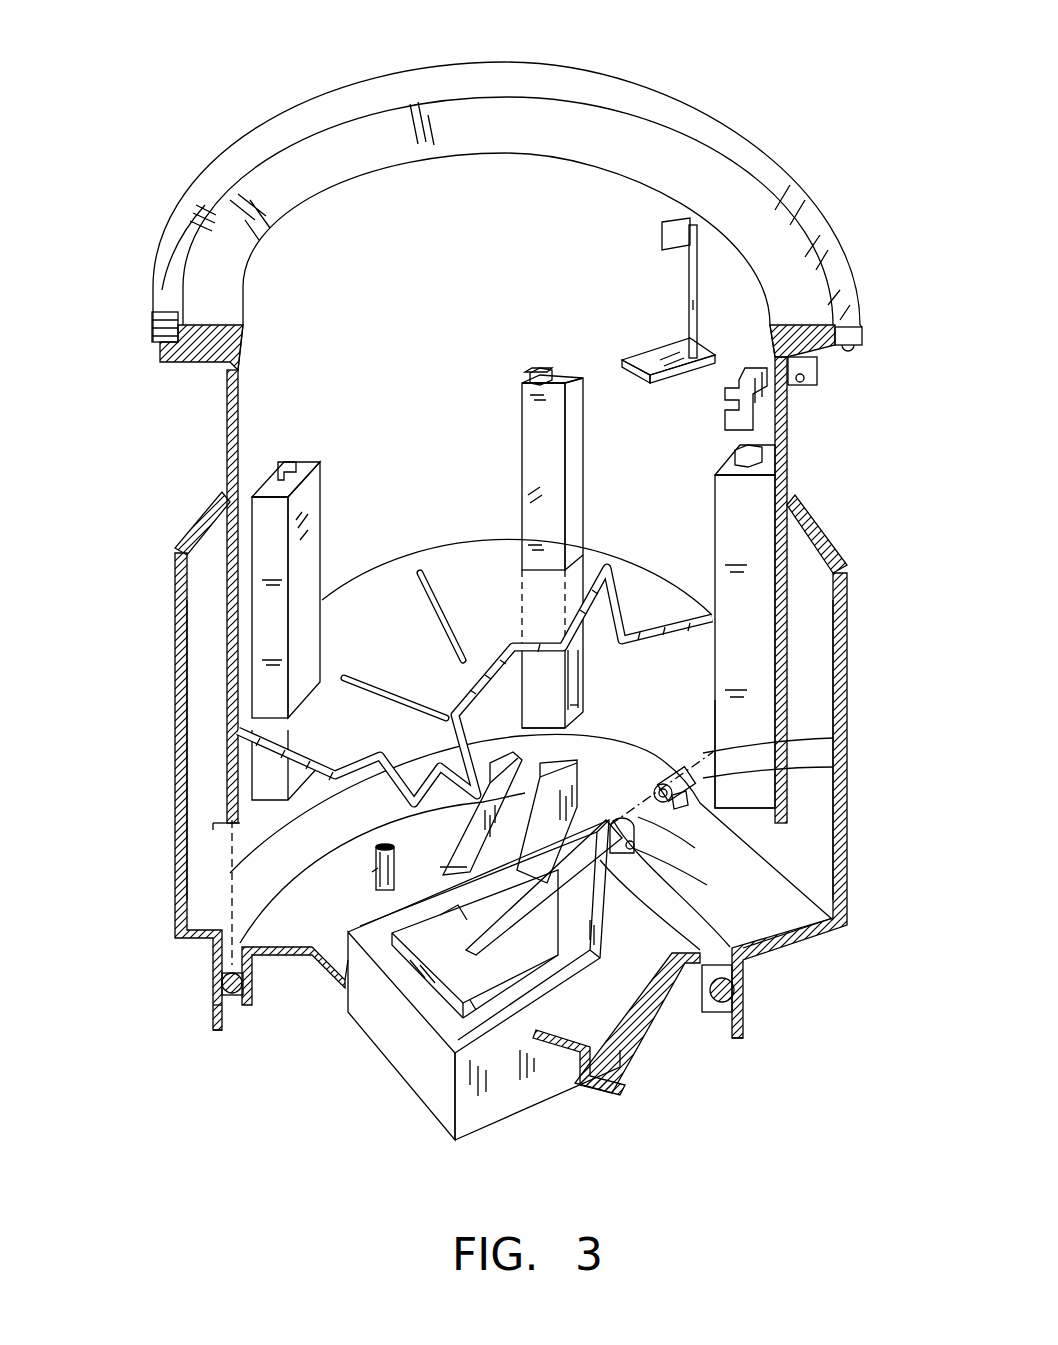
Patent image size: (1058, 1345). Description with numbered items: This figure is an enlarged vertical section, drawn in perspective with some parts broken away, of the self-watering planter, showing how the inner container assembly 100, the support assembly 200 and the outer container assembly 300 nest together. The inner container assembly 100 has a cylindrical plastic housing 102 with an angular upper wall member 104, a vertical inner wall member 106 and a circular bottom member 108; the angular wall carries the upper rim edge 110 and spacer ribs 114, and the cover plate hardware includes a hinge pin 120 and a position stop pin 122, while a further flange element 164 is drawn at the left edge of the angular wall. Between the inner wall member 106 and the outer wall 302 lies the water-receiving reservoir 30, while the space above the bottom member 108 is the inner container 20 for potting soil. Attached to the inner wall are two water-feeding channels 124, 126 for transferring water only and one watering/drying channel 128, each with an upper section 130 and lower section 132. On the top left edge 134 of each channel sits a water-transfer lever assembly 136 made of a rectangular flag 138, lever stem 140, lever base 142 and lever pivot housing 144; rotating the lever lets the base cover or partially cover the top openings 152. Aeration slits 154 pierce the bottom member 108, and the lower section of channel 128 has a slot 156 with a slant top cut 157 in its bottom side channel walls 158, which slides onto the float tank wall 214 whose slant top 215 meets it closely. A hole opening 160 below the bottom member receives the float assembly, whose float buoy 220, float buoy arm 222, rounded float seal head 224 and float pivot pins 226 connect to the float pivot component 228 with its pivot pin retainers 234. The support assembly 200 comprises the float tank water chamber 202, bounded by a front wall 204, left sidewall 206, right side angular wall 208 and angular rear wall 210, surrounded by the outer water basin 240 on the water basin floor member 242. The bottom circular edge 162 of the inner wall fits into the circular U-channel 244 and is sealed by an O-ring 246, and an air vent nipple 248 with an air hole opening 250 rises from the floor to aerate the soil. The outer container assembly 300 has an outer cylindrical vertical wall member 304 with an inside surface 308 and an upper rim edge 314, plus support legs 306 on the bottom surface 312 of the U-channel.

The inner container 20 is at (452, 188).
The water-receiving reservoir 30 is at (207, 727).
The inner container assembly 100 is at (553, 201).
The cylindrical plastic housing 102 is at (223, 412).
The angular upper wall member 104 is at (338, 150).
The inner wall member 106 is at (237, 387).
The circular bottom member 108 is at (453, 548).
The upper rim edge 110 is at (240, 175).
The spacer ribs 114 is at (175, 358).
The hinge pin 120 is at (800, 393).
The position stop pin 122 is at (848, 352).
The water-feeding channel 124 is at (312, 522).
The water-feeding channel 126 is at (720, 543).
The water-feeding channel 128 is at (533, 442).
The upper section 130 is at (318, 480).
The lower section 132 is at (276, 790).
The top left edge 134 is at (545, 365).
The water-transfer lever assembly 136 is at (683, 273).
The rectangular flag 138 is at (661, 220).
The lever stem 140 is at (687, 298).
The lever base 142 is at (662, 347).
The lever pivot housing 144 is at (753, 363).
The top openings 152 is at (278, 467).
The aeration slits 154 is at (430, 600).
The slot 156 is at (588, 712).
The slant top cut 157 is at (598, 640).
The bottom side channel walls 158 is at (545, 725).
The hole opening 160 is at (833, 738).
The bottom circular edge 162 is at (215, 828).
The dome flange 164 is at (152, 335).
The support assembly 200 is at (656, 985).
The float tank water chamber 202 is at (512, 997).
The front wall 204 is at (473, 1110).
The left sidewall 206 is at (403, 1060).
The right side angular wall 208 is at (587, 940).
The angular rear wall 210 is at (360, 927).
The float tank wall 214 is at (457, 908).
The slant top 215 is at (467, 750).
The float buoy 220 is at (475, 944).
The float buoy arm 222 is at (560, 870).
The float seal head 224 is at (695, 848).
The float pivot pins 226 is at (707, 885).
The float pivot component 228 is at (668, 770).
The pivot pin retainers 234 is at (833, 767).
The outer water basin 240 is at (330, 938).
The water basin floor member 242 is at (693, 967).
The circular U-channel 244 is at (248, 930).
The O-ring 246 is at (225, 983).
The air vent nipple 248 is at (378, 873).
The air hole opening 250 is at (394, 855).
The outer container assembly 300 is at (140, 680).
The outer wall 302 is at (172, 716).
The outer cylindrical vertical wall member 304 is at (205, 590).
The support legs 306 is at (213, 1013).
The inside surface 308 is at (207, 640).
The bottom surface 312 is at (232, 995).
The upper rim edge 314 is at (197, 527).